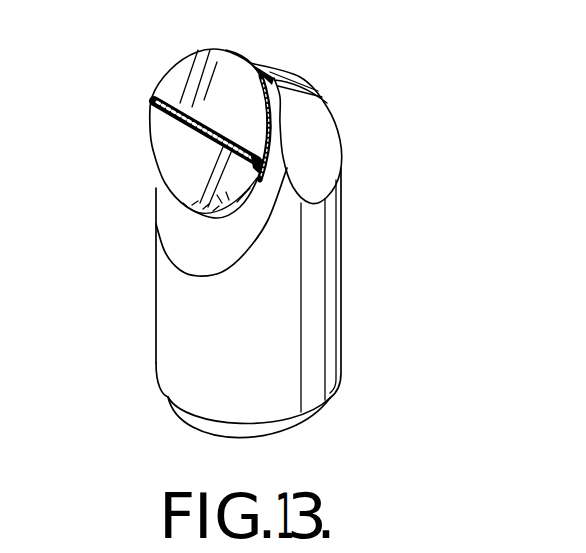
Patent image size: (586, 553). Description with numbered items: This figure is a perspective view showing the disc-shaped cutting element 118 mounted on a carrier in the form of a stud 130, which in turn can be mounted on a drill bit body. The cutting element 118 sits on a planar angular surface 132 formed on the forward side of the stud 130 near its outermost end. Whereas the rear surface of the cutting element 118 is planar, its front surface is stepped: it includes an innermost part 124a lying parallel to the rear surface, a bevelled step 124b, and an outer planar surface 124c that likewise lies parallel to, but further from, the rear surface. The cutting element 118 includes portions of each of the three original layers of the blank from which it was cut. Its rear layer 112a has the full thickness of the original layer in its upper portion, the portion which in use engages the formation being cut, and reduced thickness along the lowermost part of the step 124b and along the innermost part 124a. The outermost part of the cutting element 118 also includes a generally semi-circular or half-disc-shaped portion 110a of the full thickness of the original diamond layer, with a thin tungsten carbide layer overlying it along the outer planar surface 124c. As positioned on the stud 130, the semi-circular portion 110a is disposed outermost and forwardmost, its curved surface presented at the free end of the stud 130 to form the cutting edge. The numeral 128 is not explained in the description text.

The cutting element 118 is at (140, 113).
The innermost part of front surface 124a is at (175, 175).
The bevelled step 124b is at (174, 134).
The planar surface 124c is at (184, 84).
The plug top edge 128 is at (250, 64).
The half-disc-shaped portion of diamond layer 110a is at (273, 107).
The rear layer 112a is at (270, 150).
The stud 130 is at (310, 310).
The planar angular surface 132 is at (187, 232).